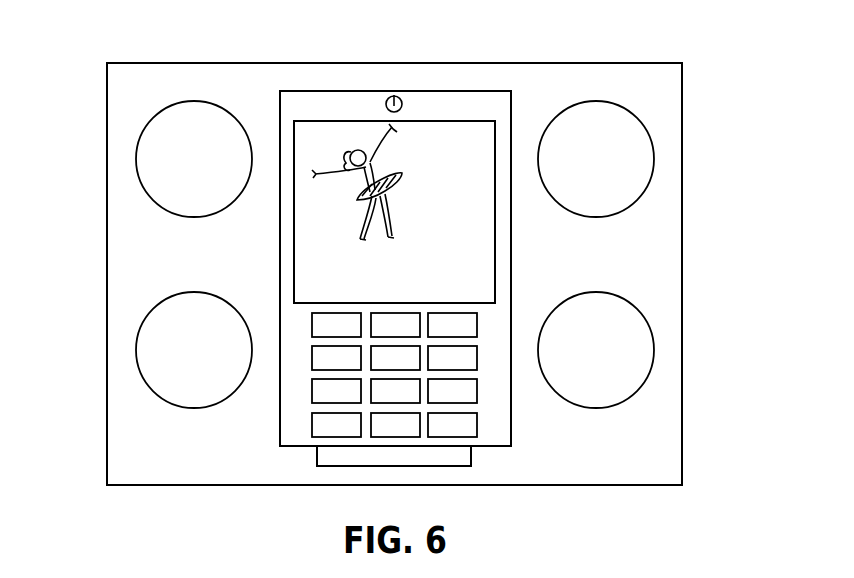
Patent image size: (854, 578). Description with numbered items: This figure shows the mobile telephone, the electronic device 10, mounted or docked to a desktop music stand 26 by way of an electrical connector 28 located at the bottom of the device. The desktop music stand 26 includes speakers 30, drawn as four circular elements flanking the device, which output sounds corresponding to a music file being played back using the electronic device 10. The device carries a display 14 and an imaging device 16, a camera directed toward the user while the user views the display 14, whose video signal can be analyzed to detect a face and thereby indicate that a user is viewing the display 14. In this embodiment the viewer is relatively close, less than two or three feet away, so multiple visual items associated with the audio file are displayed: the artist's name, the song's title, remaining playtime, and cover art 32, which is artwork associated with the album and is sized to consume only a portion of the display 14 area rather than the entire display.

The electronic device 10 is at (295, 103).
The display 14 is at (335, 132).
The imaging device 16 is at (393, 94).
The desktop music stand 26 is at (237, 82).
The electrical connector 28 is at (328, 455).
The speakers 30 is at (136, 163).
The cover art 32 is at (355, 200).